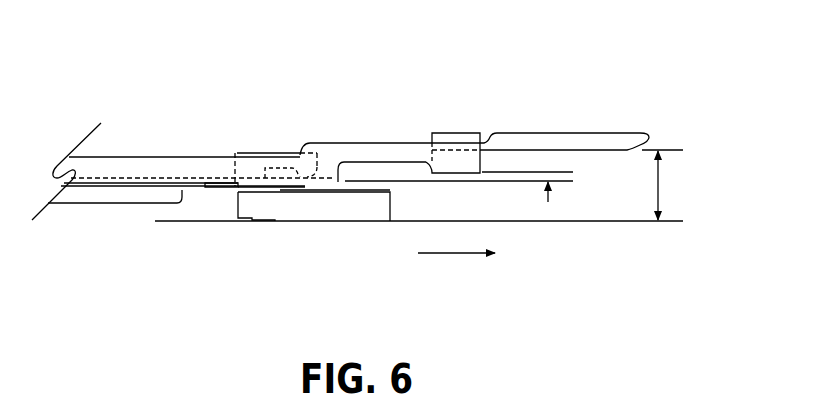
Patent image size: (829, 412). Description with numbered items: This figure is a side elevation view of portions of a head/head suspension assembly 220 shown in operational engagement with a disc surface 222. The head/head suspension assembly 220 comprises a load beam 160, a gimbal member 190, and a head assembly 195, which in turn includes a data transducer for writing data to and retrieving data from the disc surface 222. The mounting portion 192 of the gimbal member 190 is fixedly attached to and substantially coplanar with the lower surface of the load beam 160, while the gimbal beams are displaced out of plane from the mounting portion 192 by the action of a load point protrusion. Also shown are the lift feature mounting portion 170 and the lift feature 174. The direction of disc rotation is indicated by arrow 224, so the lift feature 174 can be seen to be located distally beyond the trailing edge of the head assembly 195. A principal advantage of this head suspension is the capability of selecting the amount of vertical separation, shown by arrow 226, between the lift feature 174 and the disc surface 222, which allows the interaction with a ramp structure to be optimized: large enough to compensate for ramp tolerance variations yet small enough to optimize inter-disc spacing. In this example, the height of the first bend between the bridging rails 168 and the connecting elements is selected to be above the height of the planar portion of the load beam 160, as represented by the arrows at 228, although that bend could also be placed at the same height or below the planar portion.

The load beam 160 is at (188, 167).
The bridging rails 168 is at (382, 152).
The lift feature mounting portion 170 is at (480, 133).
The lift feature 174 is at (583, 142).
The gimbal member 190 is at (216, 186).
The mounting portion 192 is at (104, 203).
The head assembly 195 is at (335, 207).
The head/head suspension assembly 220 is at (138, 105).
The disc surface 222 is at (600, 222).
The arrow 224 is at (450, 253).
The arrow 226 is at (658, 187).
The arrows 228 is at (548, 171).